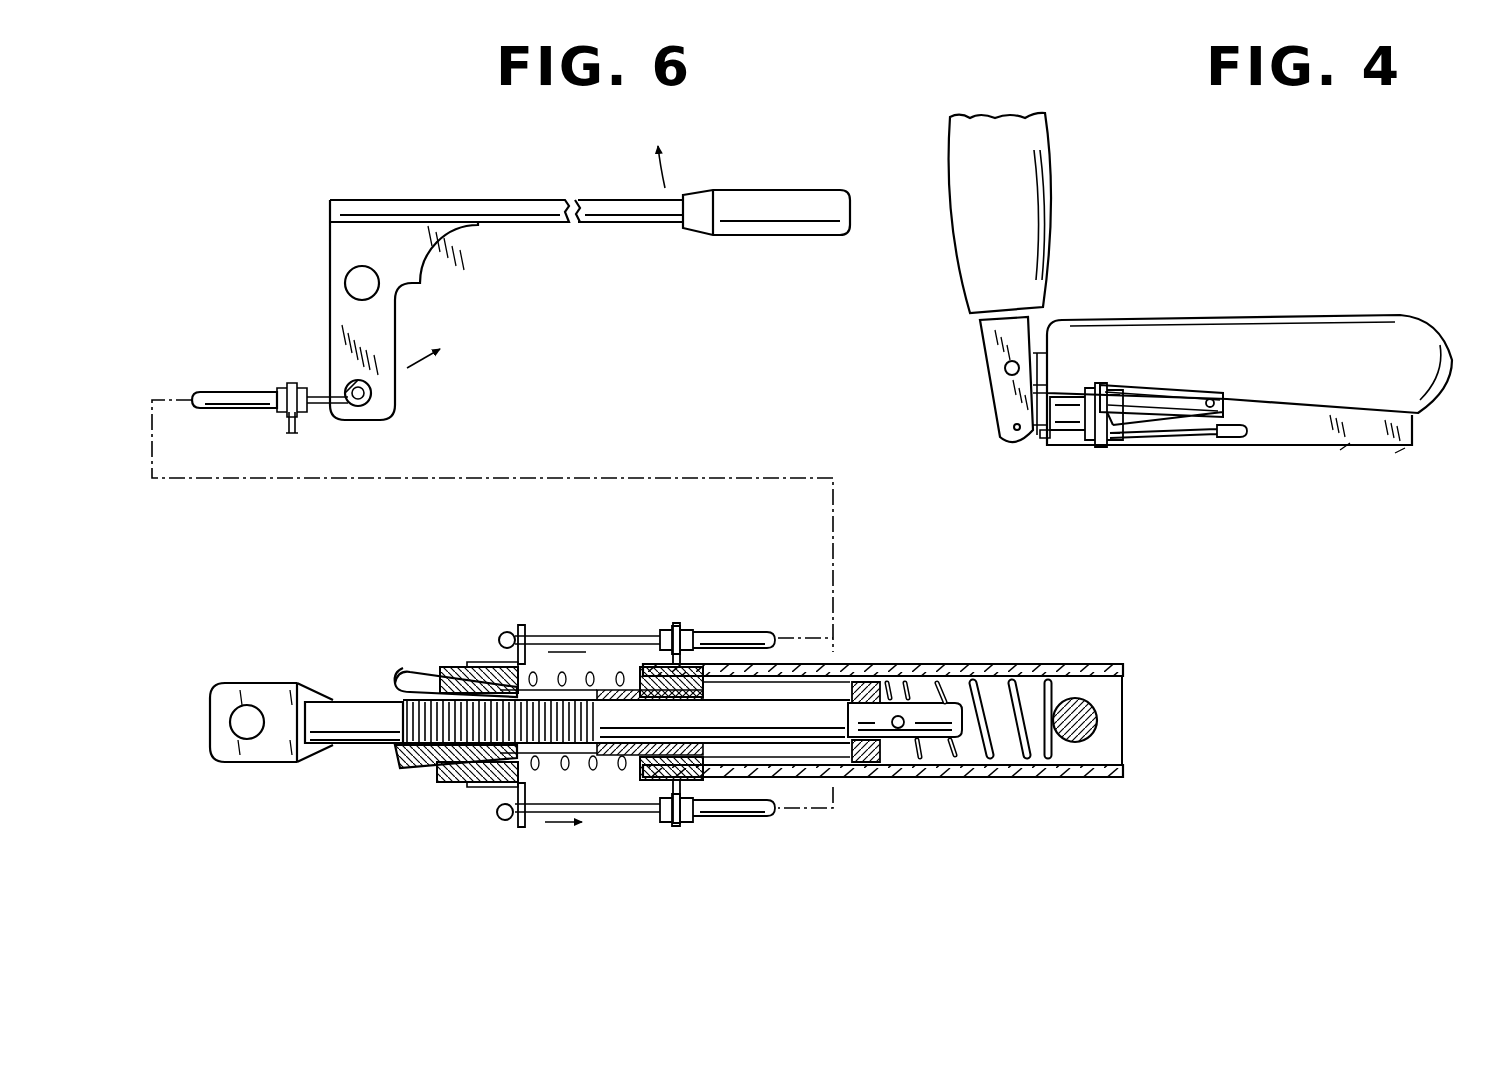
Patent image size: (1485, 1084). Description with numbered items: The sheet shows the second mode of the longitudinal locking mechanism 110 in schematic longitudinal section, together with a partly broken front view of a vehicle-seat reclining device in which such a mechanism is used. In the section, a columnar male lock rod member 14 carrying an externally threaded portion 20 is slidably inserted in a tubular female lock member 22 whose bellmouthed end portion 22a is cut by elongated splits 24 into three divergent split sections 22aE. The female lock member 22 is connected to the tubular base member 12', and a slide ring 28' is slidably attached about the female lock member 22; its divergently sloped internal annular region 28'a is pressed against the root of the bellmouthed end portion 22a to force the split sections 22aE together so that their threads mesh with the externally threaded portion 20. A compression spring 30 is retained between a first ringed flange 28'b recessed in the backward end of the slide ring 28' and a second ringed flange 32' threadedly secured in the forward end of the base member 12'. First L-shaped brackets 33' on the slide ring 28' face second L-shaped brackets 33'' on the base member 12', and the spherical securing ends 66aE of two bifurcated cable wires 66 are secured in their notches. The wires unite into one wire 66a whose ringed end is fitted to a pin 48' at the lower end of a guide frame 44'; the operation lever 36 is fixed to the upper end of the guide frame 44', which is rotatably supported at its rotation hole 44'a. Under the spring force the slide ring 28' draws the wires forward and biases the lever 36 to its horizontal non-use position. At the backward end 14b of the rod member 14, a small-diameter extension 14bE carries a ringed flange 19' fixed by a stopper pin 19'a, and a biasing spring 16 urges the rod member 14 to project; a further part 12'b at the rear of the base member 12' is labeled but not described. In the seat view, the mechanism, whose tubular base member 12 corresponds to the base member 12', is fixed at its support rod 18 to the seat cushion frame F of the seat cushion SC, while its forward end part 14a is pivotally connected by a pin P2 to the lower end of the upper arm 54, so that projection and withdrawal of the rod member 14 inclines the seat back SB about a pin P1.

In FIG. 6, the longitudinal locking mechanism 110 is at (310, 180).
In FIG. 4, the longitudinal locking mechanism 110 is at (1160, 337).
In FIG. 6, the operation lever 36 is at (758, 188).
In FIG. 4, the operation lever 36 is at (1225, 440).
In FIG. 6, the rotation hole 44'a is at (306, 265).
In FIG. 6, the guide frame 44' is at (526, 294).
In FIG. 6, the pin 48' is at (315, 362).
In FIG. 6, the cable wire 66a is at (320, 410).
In FIG. 6, the cable wires 66 is at (773, 838).
In FIG. 6, the forward end part 14a is at (233, 683).
In FIG. 6, the male lock rod member 14 is at (325, 757).
In FIG. 4, the male lock rod member 14 is at (1040, 442).
In FIG. 6, the externally threaded portion 20 is at (405, 723).
In FIG. 6, the female lock member 22 is at (386, 782).
In FIG. 6, the bellmouthed end portion 22a is at (395, 650).
In FIG. 6, the splits 24 is at (400, 678).
In FIG. 6, the divergent split sections 22aE is at (407, 677).
In FIG. 6, the slide ring 28' is at (475, 652).
In FIG. 6, the divergently sloped internal annular region 28'a is at (464, 818).
In FIG. 6, the first ringed flange 28'b is at (601, 776).
In FIG. 6, the first L-shaped brackets 33' is at (500, 721).
In FIG. 6, the spherical securing ends 66aE is at (512, 633).
In FIG. 6, the compression spring 30 is at (600, 773).
In FIG. 6, the second ringed flange 32' is at (671, 777).
In FIG. 6, the second L-shaped brackets 33'' is at (734, 723).
In FIG. 6, the tubular base member 12' is at (883, 761).
In FIG. 6, the backward end 14b is at (825, 703).
In FIG. 6, the extension 14bE is at (955, 703).
In FIG. 6, the ringed flange 19' is at (920, 676).
In FIG. 6, the stopper pin 19'a is at (903, 779).
In FIG. 6, the biasing spring 16 is at (993, 757).
In FIG. 6, the end plug 12'b is at (1111, 667).
In FIG. 6, the support rod 18 is at (1095, 707).
In FIG. 4, the support rod 18 is at (1220, 398).
In FIG. 4, the seat back SB is at (1062, 175).
In FIG. 4, the upper arm 54 is at (990, 388).
In FIG. 4, the pin P1 is at (1003, 370).
In FIG. 4, the pin P2 is at (1012, 437).
In FIG. 4, the seat cushion SC is at (1380, 320).
In FIG. 4, the seat cushion frame F is at (1418, 428).
In FIG. 4, the tubular base member 12 is at (1173, 377).